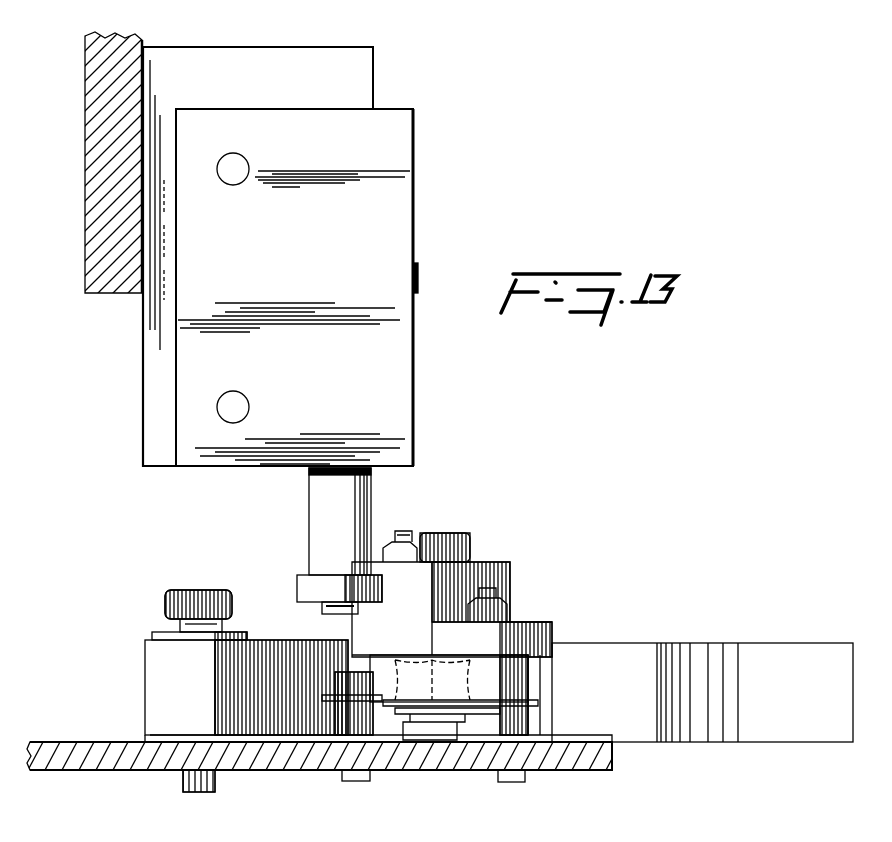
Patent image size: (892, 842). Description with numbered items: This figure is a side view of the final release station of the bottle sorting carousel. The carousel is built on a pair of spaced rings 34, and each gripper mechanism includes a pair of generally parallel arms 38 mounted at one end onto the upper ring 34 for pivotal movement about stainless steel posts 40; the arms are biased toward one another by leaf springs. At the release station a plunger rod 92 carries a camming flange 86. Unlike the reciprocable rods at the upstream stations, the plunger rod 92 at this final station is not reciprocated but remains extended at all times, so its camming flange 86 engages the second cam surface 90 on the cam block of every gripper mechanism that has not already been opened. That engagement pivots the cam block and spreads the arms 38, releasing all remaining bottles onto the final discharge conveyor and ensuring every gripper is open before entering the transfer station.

The spaced rings 34 is at (118, 758).
The arms 38 is at (650, 652).
The stainless steel posts 40 is at (186, 590).
The camming flange 86 is at (301, 585).
The second cam surface 90 is at (418, 600).
The plunger rod 92 is at (365, 505).